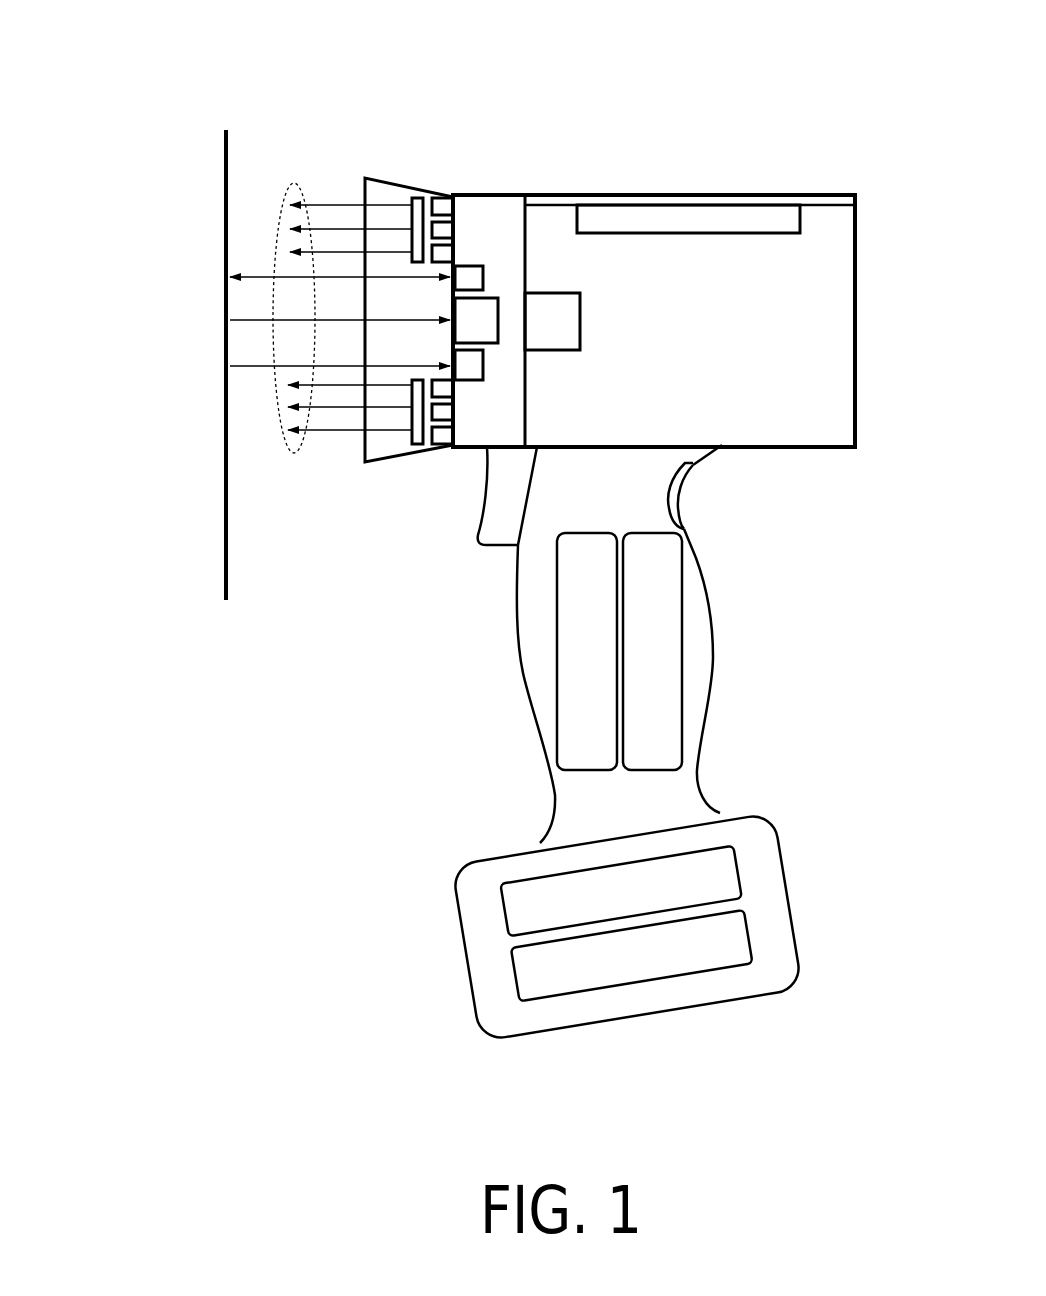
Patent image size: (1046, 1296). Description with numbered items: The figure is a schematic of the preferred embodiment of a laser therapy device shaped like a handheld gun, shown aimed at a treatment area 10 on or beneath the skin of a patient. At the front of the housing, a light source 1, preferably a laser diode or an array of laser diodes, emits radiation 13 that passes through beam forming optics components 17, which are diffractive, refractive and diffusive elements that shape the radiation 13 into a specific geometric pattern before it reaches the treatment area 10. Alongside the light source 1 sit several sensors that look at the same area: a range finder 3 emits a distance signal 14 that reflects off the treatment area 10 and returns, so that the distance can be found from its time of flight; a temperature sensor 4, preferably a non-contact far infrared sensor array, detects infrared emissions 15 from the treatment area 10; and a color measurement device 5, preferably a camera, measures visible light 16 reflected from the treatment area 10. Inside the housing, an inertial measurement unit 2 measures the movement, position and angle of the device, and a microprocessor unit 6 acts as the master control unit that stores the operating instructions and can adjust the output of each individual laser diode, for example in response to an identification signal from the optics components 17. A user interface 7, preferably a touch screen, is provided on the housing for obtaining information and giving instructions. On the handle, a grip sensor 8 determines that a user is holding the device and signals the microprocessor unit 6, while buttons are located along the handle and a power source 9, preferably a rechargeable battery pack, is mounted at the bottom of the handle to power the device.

The light source 1 is at (437, 188).
The inertial measurement unit 2 is at (583, 332).
The range finder 3 is at (478, 258).
The temperature sensor 4 is at (495, 293).
The color measurement device 5 is at (470, 385).
The microprocessor unit 6 is at (803, 220).
The user interface 7 is at (802, 193).
The grip sensor 8 is at (692, 486).
The power source 9 is at (653, 612).
The treatment area 10 is at (220, 148).
The radiation 13 is at (297, 183).
The distance signal 14 is at (265, 270).
The infrared emissions 15 is at (257, 322).
The visible light 16 is at (265, 368).
The optics components 17 is at (415, 188).